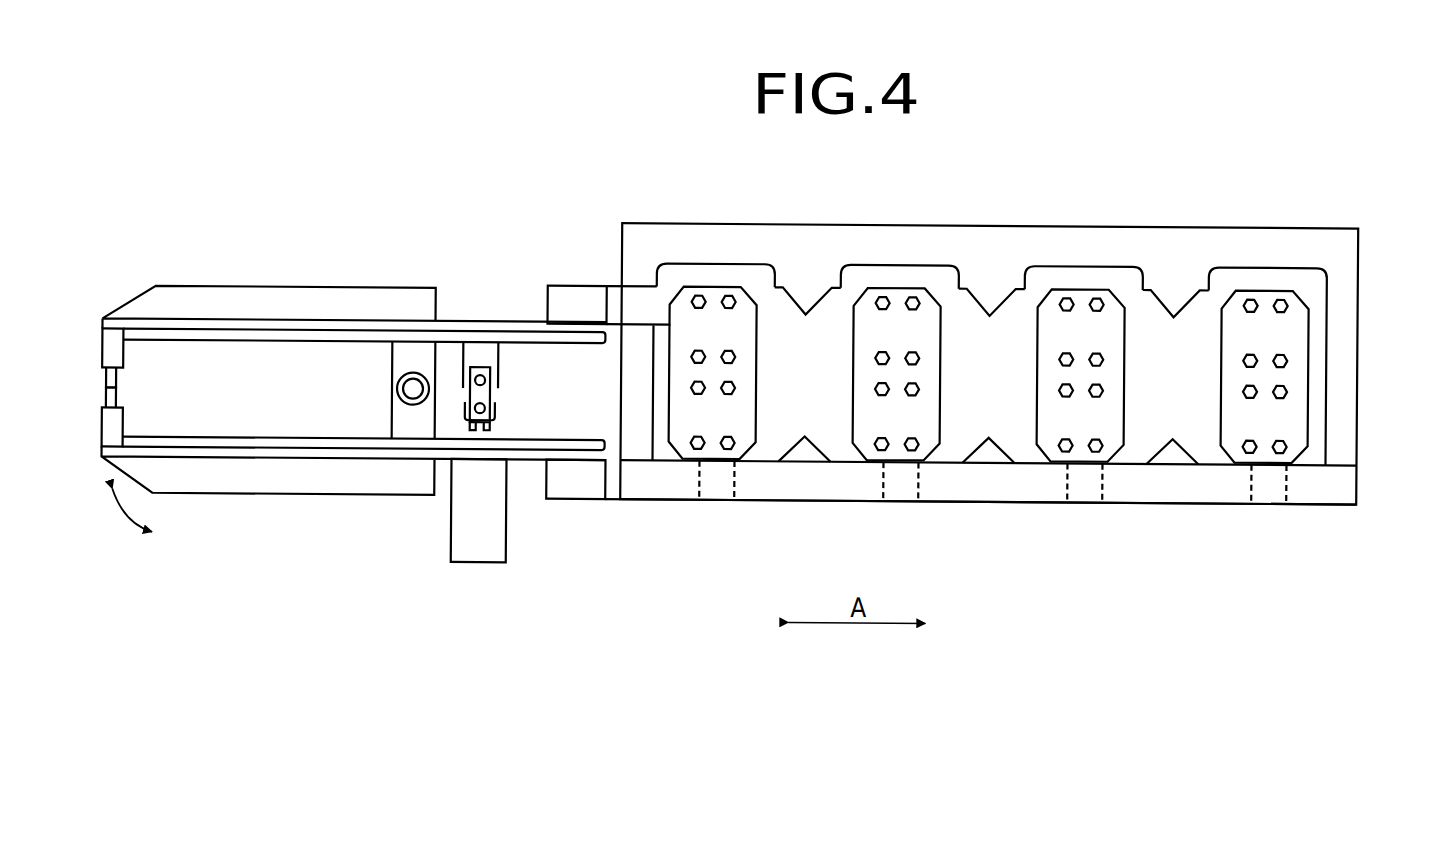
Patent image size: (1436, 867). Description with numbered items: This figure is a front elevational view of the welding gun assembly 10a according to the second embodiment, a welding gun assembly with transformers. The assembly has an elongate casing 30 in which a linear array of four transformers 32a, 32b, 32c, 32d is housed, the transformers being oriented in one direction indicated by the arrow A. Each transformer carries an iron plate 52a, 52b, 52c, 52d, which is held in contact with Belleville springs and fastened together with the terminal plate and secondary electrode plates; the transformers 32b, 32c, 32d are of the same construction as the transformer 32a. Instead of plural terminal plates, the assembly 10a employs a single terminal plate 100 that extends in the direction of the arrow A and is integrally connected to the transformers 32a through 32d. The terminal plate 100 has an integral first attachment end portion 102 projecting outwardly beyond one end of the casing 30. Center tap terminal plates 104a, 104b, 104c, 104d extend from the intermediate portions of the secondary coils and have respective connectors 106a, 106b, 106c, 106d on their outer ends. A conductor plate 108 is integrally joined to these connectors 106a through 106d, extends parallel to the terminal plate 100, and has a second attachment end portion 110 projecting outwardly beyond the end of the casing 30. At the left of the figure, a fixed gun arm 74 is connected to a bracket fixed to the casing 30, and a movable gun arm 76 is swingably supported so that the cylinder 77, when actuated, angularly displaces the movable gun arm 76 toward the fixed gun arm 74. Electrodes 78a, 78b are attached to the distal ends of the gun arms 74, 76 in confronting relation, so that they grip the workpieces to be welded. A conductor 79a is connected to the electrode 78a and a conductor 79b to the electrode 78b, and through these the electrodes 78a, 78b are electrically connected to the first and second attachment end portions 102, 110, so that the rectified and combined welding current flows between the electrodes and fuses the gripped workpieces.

The welding gun assembly 10a is at (1068, 165).
The casing 30 is at (962, 243).
The transformer 32a is at (708, 252).
The transformer 32b is at (866, 251).
The transformer 32c is at (1056, 248).
The transformer 32d is at (1232, 248).
The iron plate 52a is at (740, 410).
The iron plate 52b is at (924, 409).
The iron plate 52c is at (1108, 408).
The iron plate 52d is at (1300, 406).
The fixed gun arm 74 is at (272, 291).
The movable gun arm 76 is at (322, 472).
The cylinder 77 is at (470, 547).
The electrode 78a is at (116, 386).
The electrode 78b is at (116, 406).
The conductor 79a is at (336, 332).
The conductor 79b is at (288, 460).
The terminal plate 100 is at (978, 310).
The first attachment end portion 102 is at (582, 286).
The center tap terminal plate 104a is at (712, 464).
The center tap terminal plate 104b is at (892, 464).
The center tap terminal plate 104c is at (1078, 463).
The center tap terminal plate 104d is at (1260, 463).
The connector 106a is at (698, 482).
The connector 106b is at (937, 503).
The connector 106c is at (1110, 502).
The connector 106d is at (1297, 497).
The conductor plate 108 is at (815, 485).
The second attachment end portion 110 is at (556, 486).